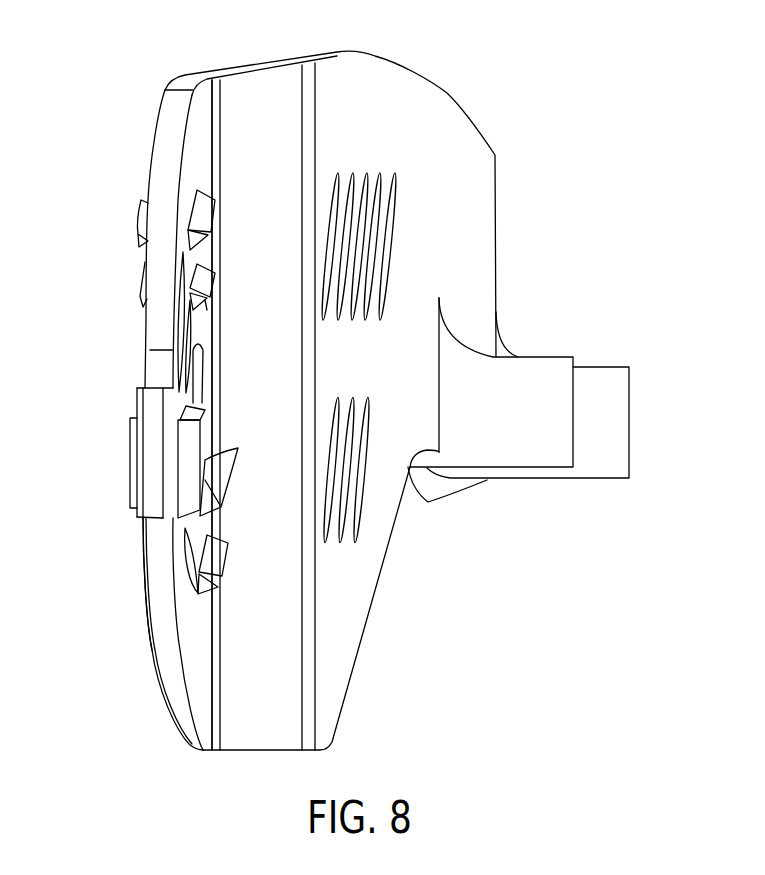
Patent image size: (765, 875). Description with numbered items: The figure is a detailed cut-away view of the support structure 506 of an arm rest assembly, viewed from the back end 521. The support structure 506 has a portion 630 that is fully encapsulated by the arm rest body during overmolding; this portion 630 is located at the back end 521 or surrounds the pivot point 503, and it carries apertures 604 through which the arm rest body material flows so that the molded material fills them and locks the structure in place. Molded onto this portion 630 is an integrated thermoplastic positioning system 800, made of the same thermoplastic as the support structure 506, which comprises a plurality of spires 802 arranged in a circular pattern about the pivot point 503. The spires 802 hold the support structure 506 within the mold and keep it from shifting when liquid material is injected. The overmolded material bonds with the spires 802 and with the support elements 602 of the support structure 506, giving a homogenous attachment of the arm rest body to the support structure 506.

The support structure 506 is at (450, 94).
The portion of the support structure 630 is at (152, 90).
The apertures 604 is at (173, 336).
The integrated thermoplastic positioning system 800 is at (234, 376).
The pivot point 503 is at (110, 412).
The spires 802 is at (141, 215).
The support elements 602 is at (428, 503).
The back end 521 is at (112, 681).